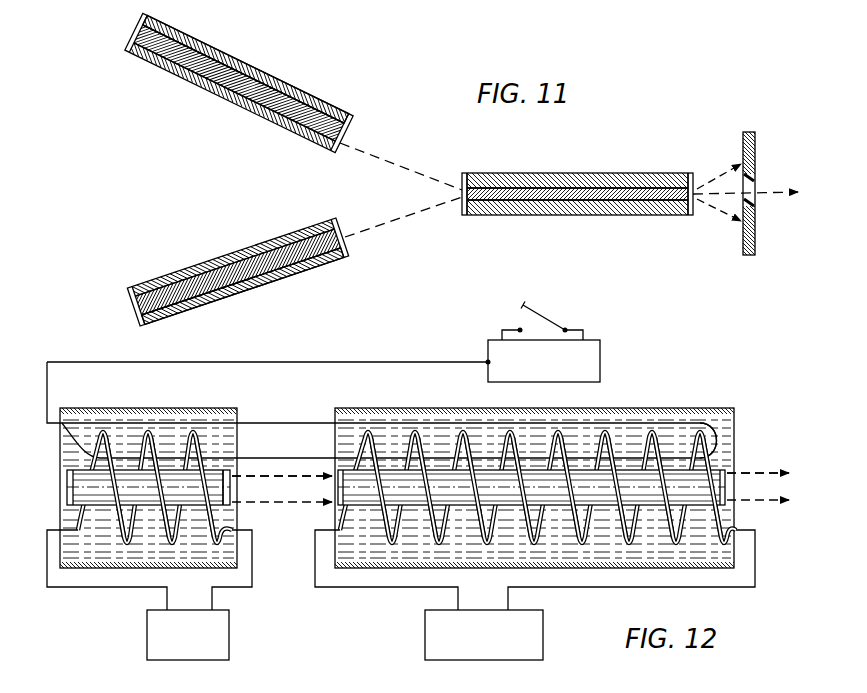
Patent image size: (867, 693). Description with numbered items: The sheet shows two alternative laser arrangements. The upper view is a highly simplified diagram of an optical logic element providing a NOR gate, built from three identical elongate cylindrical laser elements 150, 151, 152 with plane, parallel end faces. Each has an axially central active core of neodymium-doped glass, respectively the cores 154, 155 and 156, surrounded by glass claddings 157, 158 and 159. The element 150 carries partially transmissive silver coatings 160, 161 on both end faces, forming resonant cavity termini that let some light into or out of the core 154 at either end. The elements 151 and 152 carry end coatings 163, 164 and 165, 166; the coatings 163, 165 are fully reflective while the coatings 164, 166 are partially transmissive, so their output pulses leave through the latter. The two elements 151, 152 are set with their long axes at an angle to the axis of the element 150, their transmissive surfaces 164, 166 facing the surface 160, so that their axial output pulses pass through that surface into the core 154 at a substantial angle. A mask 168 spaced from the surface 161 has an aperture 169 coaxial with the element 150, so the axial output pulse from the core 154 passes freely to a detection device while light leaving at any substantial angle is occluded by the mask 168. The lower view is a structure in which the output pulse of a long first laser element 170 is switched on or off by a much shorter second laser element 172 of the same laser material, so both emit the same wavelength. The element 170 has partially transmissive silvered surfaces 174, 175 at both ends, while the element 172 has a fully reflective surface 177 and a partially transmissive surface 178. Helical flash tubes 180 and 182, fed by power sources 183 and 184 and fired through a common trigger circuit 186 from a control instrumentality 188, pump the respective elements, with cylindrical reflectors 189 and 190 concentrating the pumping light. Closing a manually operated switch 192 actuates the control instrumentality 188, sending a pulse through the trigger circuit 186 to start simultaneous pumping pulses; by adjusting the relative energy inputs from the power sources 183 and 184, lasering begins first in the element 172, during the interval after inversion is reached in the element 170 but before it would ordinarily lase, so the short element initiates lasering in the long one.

In FIG. 11, the laser element 150 is at (547, 173).
In FIG. 11, the laser element 151 is at (222, 50).
In FIG. 11, the laser element 152 is at (258, 243).
In FIG. 11, the core portion 154 is at (628, 200).
In FIG. 11, the core portion 155 is at (223, 100).
In FIG. 11, the core portion 156 is at (260, 281).
In FIG. 11, the glass cladding 157 is at (580, 212).
In FIG. 11, the glass cladding 158 is at (292, 86).
In FIG. 11, the glass cladding 159 is at (198, 312).
In FIG. 11, the partially transmissive silver coating 160 is at (462, 207).
In FIG. 11, the partially transmissive silver coating 161 is at (693, 210).
In FIG. 11, the silvered end coating 163 is at (133, 40).
In FIG. 11, the silvered end coating 164 is at (341, 148).
In FIG. 11, the silvered end coating 165 is at (130, 311).
In FIG. 11, the silvered end coating 166 is at (352, 246).
In FIG. 11, the mask 168 is at (755, 150).
In FIG. 11, the aperture 169 is at (750, 200).
In FIG. 12, the laser element 170 is at (414, 510).
In FIG. 12, the laser element 172 is at (108, 508).
In FIG. 12, the partially transmissive silvered surface 174 is at (310, 498).
In FIG. 12, the partially transmissive silvered surface 175 is at (727, 487).
In FIG. 12, the fully reflective silvered surface 177 is at (67, 486).
In FIG. 12, the partially transmissive silvered surface 178 is at (233, 487).
In FIG. 12, the flash tube 180 is at (443, 530).
In FIG. 12, the flash tube 182 is at (137, 517).
In FIG. 12, the power source 183 is at (543, 636).
In FIG. 12, the power source 184 is at (230, 636).
In FIG. 12, the common trigger circuit 186 is at (275, 423).
In FIG. 12, the control instrumentality 188 is at (600, 362).
In FIG. 12, the cylindrical reflector 189 is at (642, 408).
In FIG. 12, the cylindrical reflector 190 is at (143, 408).
In FIG. 12, the manually operated switch 192 is at (575, 330).